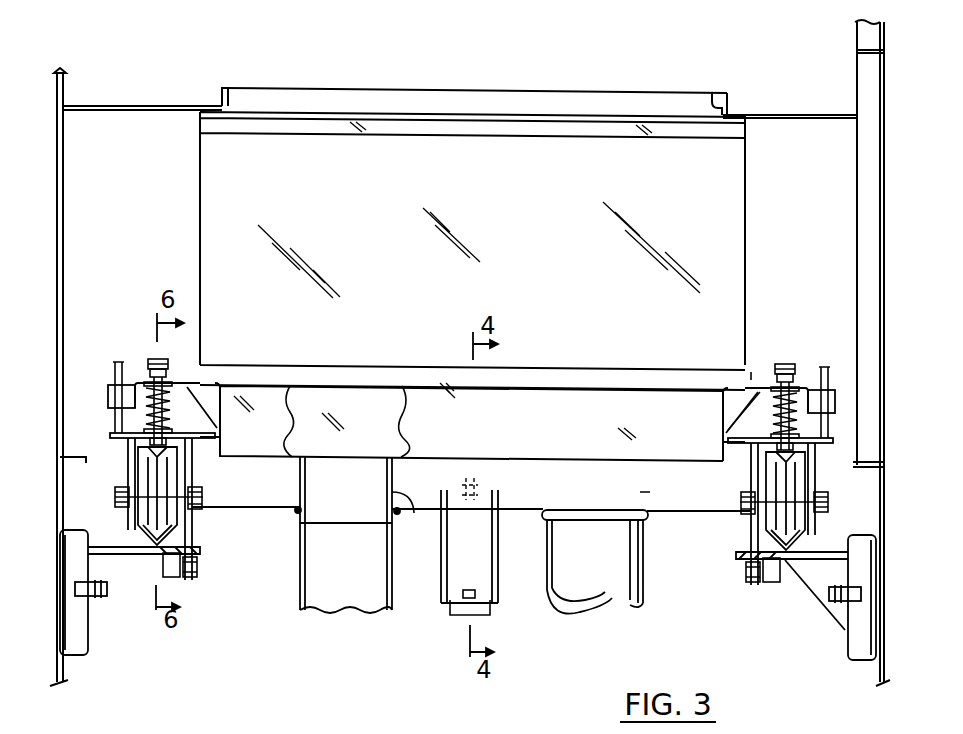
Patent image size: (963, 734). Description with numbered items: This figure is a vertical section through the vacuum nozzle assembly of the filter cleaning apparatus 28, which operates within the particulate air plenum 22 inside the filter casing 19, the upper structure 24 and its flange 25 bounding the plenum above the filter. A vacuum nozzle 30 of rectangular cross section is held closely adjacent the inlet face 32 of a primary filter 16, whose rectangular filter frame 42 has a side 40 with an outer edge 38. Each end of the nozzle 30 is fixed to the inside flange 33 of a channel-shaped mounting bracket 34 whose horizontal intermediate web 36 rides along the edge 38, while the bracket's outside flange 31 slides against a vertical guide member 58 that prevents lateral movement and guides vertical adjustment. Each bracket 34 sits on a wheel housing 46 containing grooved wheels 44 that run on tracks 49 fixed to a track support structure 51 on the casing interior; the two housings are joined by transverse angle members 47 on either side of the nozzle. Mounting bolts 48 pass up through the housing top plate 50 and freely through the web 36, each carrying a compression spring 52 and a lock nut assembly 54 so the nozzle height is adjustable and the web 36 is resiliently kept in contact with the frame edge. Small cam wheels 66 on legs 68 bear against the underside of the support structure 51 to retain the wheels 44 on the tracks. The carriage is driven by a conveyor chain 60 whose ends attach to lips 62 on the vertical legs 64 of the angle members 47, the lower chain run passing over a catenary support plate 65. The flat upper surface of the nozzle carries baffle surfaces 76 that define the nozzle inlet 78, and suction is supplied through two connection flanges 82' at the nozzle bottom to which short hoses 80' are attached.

The primary filter 16 is at (752, 190).
The filter casing 19 is at (884, 162).
The particulate air plenum 22 is at (822, 237).
The top plate 24 is at (776, 113).
The flange 25 is at (716, 100).
The filter cleaning apparatus 28 is at (660, 552).
The vacuum nozzle 30 is at (528, 456).
The outside flange 31 is at (110, 392).
The inlet face 32 is at (533, 390).
The inside flange 33 is at (222, 422).
The mounting bracket 34 is at (137, 372).
The intermediate web 36 is at (762, 392).
The outer edge 38 is at (204, 392).
The side 40 is at (200, 174).
The filter frame 42 is at (200, 222).
The grooved wheel 44 is at (143, 463).
The wheel housing 46 is at (120, 520).
The transverse angle member 47 is at (277, 508).
The mounting bolt 48 is at (171, 418).
The track 49 is at (152, 548).
The top plate 50 is at (128, 434).
The track support structure 51 is at (95, 620).
The compression spring 52 is at (775, 410).
The lock nut assembly 54 is at (798, 372).
The guide member 58 is at (108, 398).
The conveyor chain 60 is at (478, 598).
The lip 62 is at (476, 488).
The vertical leg 64 is at (700, 511).
The chain catenary support plate 65 is at (443, 606).
The cam wheel 66 is at (170, 576).
The leg 68 is at (200, 548).
The baffle surface 76 is at (628, 390).
The nozzle inlet 78 is at (375, 390).
The hose 80' is at (447, 558).
The connection flange 82' is at (539, 511).